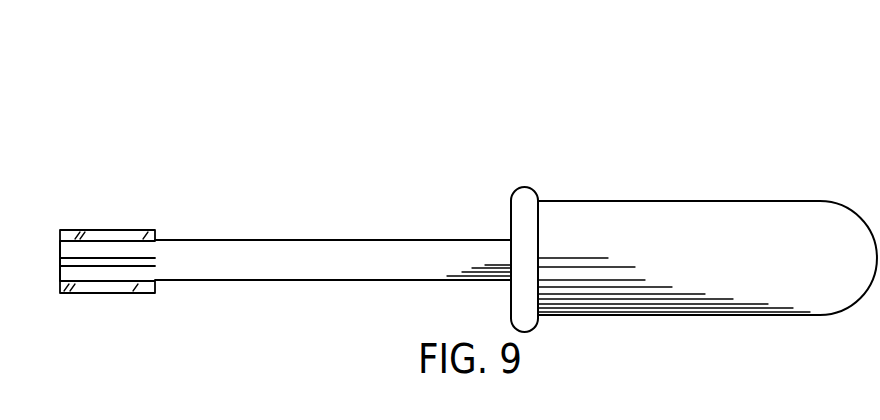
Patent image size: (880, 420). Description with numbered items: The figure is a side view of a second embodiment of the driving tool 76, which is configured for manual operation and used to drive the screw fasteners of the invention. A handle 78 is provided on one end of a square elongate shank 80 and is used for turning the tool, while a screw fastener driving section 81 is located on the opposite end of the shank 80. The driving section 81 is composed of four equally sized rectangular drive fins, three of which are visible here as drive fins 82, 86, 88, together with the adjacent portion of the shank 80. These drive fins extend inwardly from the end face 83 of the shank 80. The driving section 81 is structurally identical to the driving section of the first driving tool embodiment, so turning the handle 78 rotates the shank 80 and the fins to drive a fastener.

The driving tool 76 is at (592, 128).
The handle 78 is at (718, 235).
The square elongate shank 80 is at (357, 250).
The screw fastener driving section 81 is at (150, 307).
The drive fin 82 is at (110, 238).
The end face 83 is at (62, 277).
The drive fin 86 is at (103, 290).
The drive fin 88 is at (152, 264).